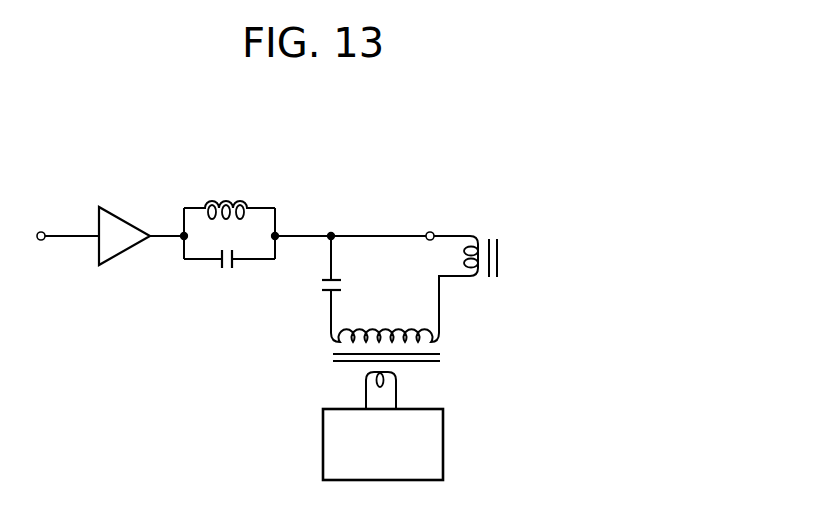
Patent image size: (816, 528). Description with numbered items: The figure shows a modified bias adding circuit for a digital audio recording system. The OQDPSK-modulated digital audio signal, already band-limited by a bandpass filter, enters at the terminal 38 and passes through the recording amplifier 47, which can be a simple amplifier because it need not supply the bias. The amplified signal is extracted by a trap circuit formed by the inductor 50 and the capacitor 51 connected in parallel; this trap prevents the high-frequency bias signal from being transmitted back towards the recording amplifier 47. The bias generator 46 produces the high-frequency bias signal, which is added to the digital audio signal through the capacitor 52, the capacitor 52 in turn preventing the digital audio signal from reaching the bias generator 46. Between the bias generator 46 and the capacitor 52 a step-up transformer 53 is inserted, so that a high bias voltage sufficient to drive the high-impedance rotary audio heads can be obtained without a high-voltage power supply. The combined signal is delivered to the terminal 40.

The terminal 38 is at (45, 232).
The recording amplifier 47 is at (121, 213).
The inductor 50 is at (242, 196).
The capacitor 51 is at (231, 272).
The capacitor 52 is at (318, 286).
The terminal 40 is at (433, 231).
The step-up transformer 53 is at (452, 359).
The bias generator 46 is at (444, 443).